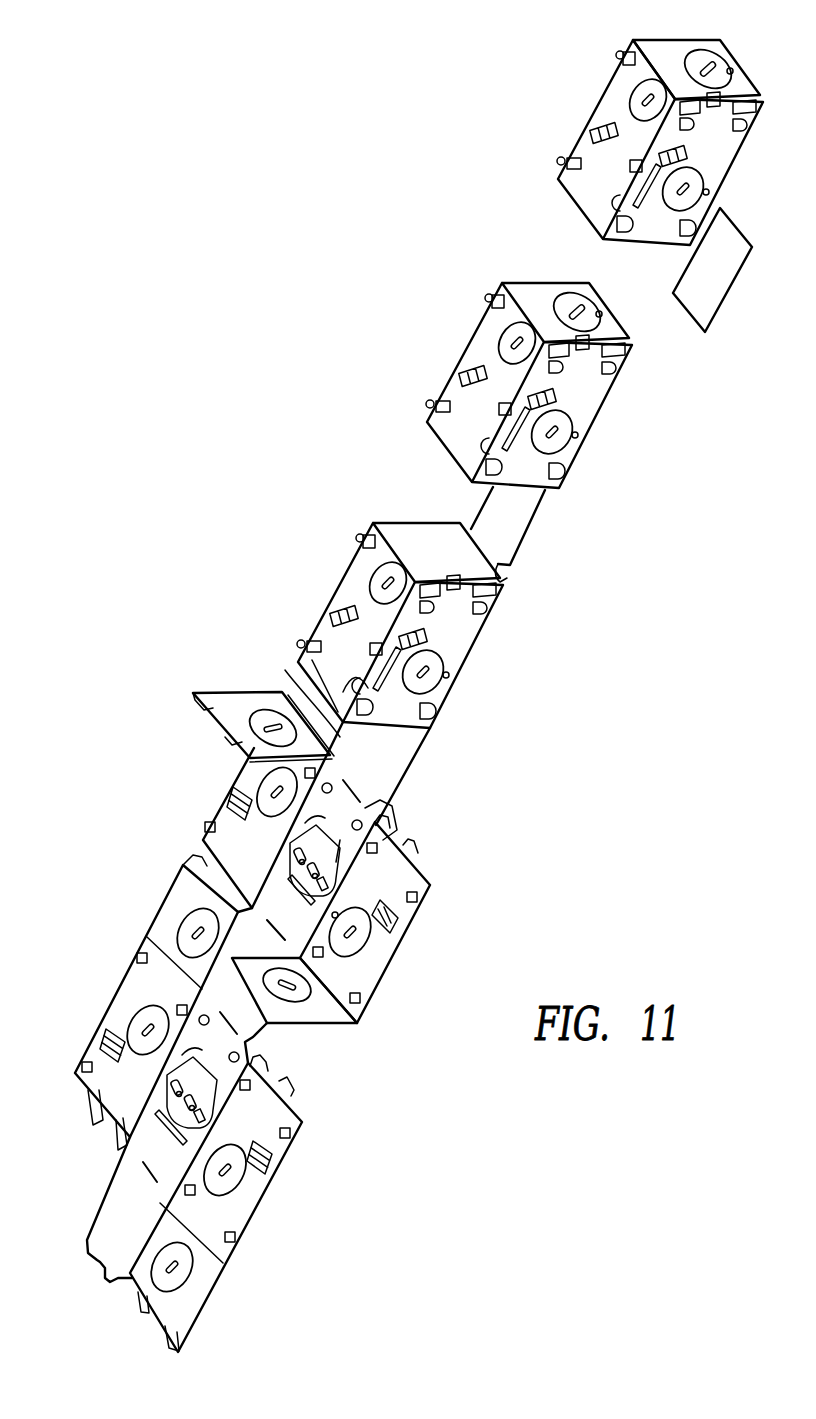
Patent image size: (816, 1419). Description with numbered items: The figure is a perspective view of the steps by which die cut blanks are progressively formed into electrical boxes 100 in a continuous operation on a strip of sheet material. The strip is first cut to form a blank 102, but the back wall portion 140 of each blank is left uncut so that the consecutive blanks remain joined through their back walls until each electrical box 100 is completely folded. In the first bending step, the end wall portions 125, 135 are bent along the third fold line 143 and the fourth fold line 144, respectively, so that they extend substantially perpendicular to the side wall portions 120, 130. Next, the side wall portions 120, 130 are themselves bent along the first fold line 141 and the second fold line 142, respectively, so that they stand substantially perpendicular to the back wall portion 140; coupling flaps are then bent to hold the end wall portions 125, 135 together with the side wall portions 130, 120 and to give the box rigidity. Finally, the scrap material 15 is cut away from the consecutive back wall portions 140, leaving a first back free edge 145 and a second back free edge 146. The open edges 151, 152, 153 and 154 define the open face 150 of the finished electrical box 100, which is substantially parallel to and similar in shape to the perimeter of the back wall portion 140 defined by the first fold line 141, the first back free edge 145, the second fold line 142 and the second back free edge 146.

The scrap material 15 is at (697, 298).
The electrical box 100 is at (533, 190).
The blank 102 is at (187, 815).
The side wall portion 120 is at (358, 580).
The end wall portion 125 is at (507, 565).
The side wall portion 130 is at (453, 630).
The end wall portion 135 is at (328, 678).
The back wall portion 140 is at (363, 830).
The first fold line 141 is at (312, 660).
The second fold line 142 is at (720, 187).
The third fold line 143 is at (285, 670).
The fourth fold line 144 is at (355, 1023).
The first back free edge 145 is at (665, 245).
The second back free edge 146 is at (743, 62).
The open face 150 is at (613, 108).
The open edge 151 is at (613, 73).
The open edge 152 is at (687, 147).
The open edge 153 is at (667, 57).
The open edge 154 is at (573, 208).